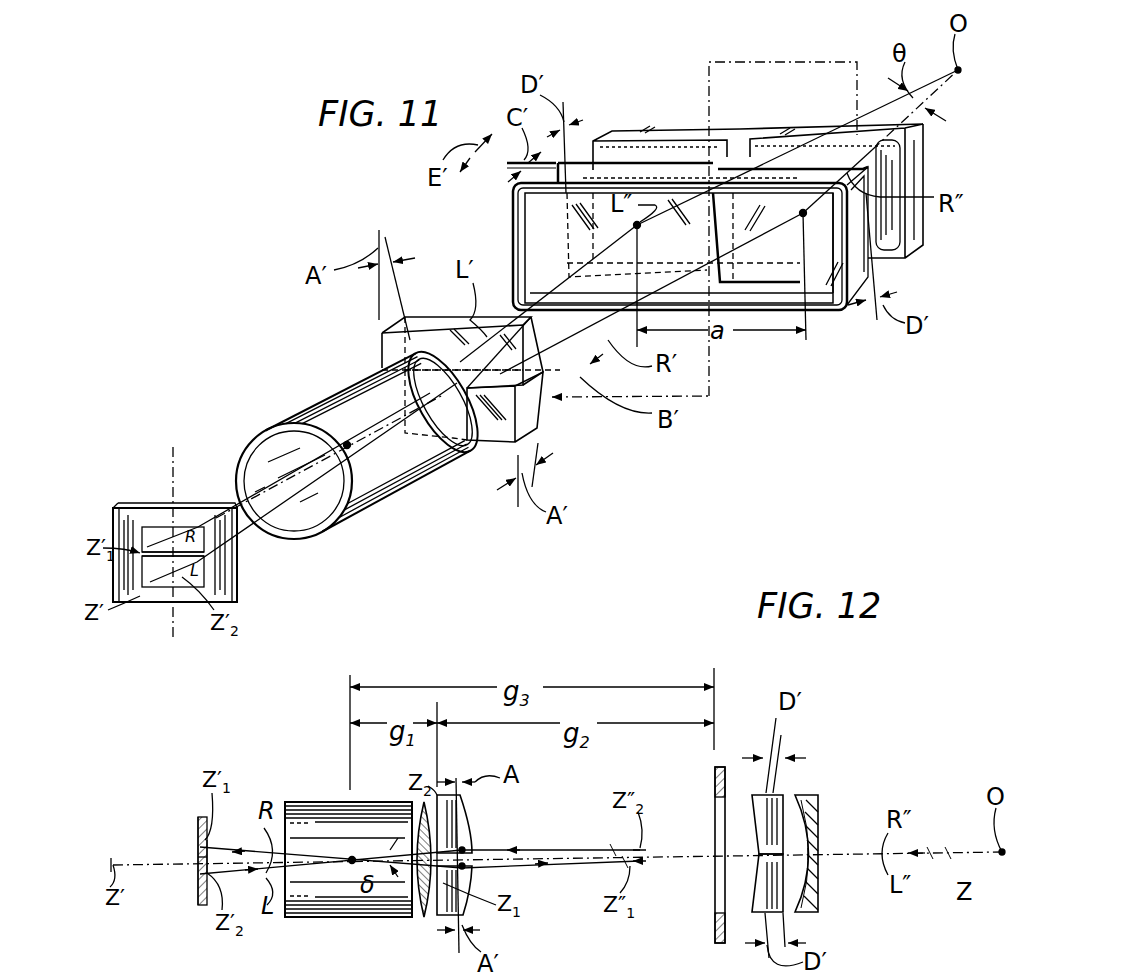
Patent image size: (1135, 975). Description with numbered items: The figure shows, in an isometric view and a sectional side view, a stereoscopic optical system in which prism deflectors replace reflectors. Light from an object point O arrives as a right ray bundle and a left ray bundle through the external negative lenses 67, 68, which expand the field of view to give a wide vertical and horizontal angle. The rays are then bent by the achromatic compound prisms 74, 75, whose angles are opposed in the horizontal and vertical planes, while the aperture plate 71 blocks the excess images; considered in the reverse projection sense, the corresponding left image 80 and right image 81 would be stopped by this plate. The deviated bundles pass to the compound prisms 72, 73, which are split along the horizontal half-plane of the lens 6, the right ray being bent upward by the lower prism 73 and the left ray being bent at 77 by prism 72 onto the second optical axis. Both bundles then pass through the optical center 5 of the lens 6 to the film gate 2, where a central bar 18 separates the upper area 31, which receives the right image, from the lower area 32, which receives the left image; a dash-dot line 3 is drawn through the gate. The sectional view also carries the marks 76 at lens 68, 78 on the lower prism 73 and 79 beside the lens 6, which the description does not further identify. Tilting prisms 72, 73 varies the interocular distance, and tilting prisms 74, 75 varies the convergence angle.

In FIG. 11, the film gate 2 is at (217, 508).
In FIG. 12, the film gate 2 is at (200, 817).
In FIG. 11, the optical axis of plate 3 is at (173, 462).
In FIG. 11, the optical center 5 is at (350, 450).
In FIG. 12, the optical center 5 is at (352, 858).
In FIG. 11, the lens 6 is at (300, 410).
In FIG. 12, the lens 6 is at (318, 907).
In FIG. 11, the central bar 18 is at (207, 554).
In FIG. 12, the central bar 18 is at (200, 855).
In FIG. 11, the upper area 31 is at (155, 534).
In FIG. 12, the upper area 31 is at (197, 840).
In FIG. 11, the lower area 32 is at (155, 575).
In FIG. 12, the lower area 32 is at (202, 873).
In FIG. 11, the external negative lens 67 is at (650, 141).
In FIG. 11, the external negative lens 68 is at (780, 140).
In FIG. 12, the external negative lens 68 is at (815, 797).
In FIG. 11, the aperture plate 71 is at (513, 227).
In FIG. 12, the aperture plate 71 is at (715, 777).
In FIG. 11, the compound prism 72 is at (380, 335).
In FIG. 12, the compound prism 72 is at (467, 812).
In FIG. 11, the compound prism 73 is at (507, 412).
In FIG. 12, the compound prism 73 is at (470, 883).
In FIG. 11, the compound prism 74 is at (596, 258).
In FIG. 12, the compound prism 74 is at (753, 817).
In FIG. 11, the compound prism 75 is at (801, 260).
In FIG. 12, the compound prism 75 is at (755, 887).
In FIG. 12, the lens surface center 76 is at (768, 853).
In FIG. 12, the bend point 77 is at (465, 850).
In FIG. 12, the lower exit point 78 is at (465, 866).
In FIG. 12, the field lens 79 is at (420, 807).
In FIG. 11, the left image 80 is at (738, 68).
In FIG. 11, the right image 81 is at (709, 396).